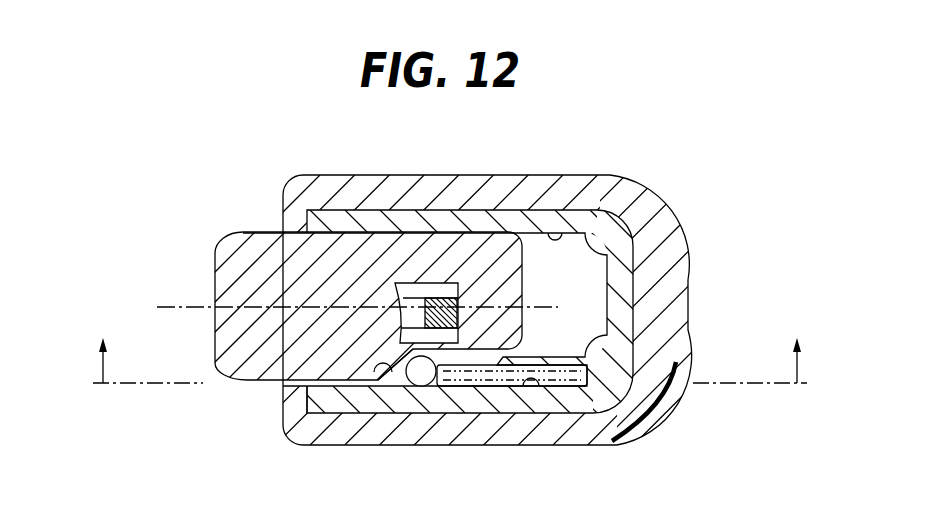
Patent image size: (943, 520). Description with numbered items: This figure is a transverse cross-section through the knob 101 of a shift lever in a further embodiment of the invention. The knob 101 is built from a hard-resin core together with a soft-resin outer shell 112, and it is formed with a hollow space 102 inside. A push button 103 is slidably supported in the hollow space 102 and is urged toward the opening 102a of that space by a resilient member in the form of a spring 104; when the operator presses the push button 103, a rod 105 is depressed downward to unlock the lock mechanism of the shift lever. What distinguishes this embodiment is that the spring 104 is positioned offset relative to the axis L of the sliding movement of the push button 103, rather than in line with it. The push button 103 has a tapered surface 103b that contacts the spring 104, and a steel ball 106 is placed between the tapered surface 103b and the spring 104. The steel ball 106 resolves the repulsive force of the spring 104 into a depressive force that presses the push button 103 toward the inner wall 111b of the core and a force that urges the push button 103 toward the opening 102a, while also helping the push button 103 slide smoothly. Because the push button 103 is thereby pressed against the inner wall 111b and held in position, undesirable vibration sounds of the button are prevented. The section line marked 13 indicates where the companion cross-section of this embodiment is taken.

The knob 101 is at (652, 184).
The hollow space 102 is at (590, 265).
The opening 102a is at (320, 387).
The push button 103 is at (262, 252).
The tapered surface 103b is at (385, 392).
The spring 104 is at (540, 385).
The rod 105 is at (437, 283).
The steel ball 106 is at (425, 386).
The inner wall 111b is at (557, 226).
The outer shell 112 is at (613, 386).
The section line 13- 13 is at (453, 346).
The axis L is at (186, 305).